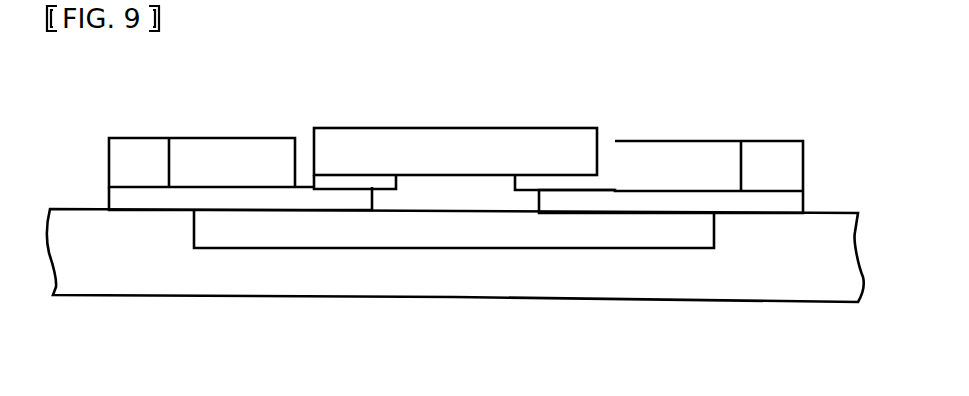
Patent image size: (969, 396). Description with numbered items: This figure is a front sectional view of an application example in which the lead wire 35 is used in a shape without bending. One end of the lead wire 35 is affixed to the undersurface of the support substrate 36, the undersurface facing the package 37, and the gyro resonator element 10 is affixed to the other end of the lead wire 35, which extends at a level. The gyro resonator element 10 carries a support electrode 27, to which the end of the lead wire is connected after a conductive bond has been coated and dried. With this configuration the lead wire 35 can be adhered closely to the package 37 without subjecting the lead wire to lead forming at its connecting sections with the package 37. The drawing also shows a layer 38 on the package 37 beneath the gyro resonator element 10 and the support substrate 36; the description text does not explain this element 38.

The gyro resonator element 10 is at (455, 147).
The support electrode 27 is at (352, 178).
The lead wire 35 is at (142, 200).
The support substrate 36 is at (238, 166).
The package 37 is at (450, 270).
The wiring layer 38 is at (615, 232).